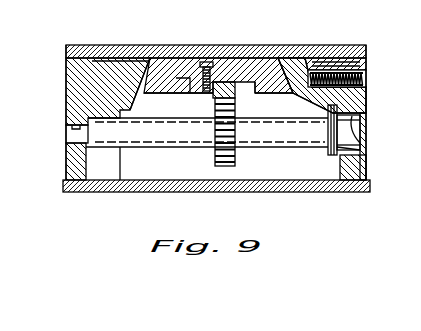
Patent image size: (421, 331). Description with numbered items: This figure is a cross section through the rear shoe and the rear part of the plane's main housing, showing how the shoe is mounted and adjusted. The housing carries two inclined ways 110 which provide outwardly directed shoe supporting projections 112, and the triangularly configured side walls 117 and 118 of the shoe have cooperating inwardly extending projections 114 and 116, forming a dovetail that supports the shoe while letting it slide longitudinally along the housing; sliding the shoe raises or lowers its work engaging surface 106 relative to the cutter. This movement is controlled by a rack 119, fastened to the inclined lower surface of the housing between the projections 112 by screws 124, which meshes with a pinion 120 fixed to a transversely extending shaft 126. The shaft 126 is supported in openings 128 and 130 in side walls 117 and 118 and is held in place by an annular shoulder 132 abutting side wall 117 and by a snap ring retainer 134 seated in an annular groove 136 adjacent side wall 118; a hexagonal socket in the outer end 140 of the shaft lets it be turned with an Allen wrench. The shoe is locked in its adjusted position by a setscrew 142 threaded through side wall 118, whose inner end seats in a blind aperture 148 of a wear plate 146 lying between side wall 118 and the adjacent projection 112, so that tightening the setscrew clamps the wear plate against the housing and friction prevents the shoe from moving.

The work engaging surface 106 is at (156, 193).
The ways 110 is at (148, 61).
The shoe supporting projections 112 is at (144, 96).
The inwardly extending projection 114 is at (135, 61).
The inwardly extending projection 116 is at (322, 66).
The side wall 117 is at (66, 87).
The side wall 118 is at (366, 103).
The rack 119 is at (236, 96).
The pinion 120 is at (214, 157).
The screws 124 is at (206, 62).
The shaft 126 is at (134, 146).
The opening 128 is at (66, 135).
The opening 130 is at (350, 132).
The annular shoulder 132 is at (76, 125).
The snap ring retainer 134 is at (329, 155).
The annular groove 136 is at (340, 148).
The outer end 140 is at (358, 123).
The setscrew 142 is at (365, 76).
The wear plate 146 is at (278, 72).
The blind aperture 148 is at (348, 66).